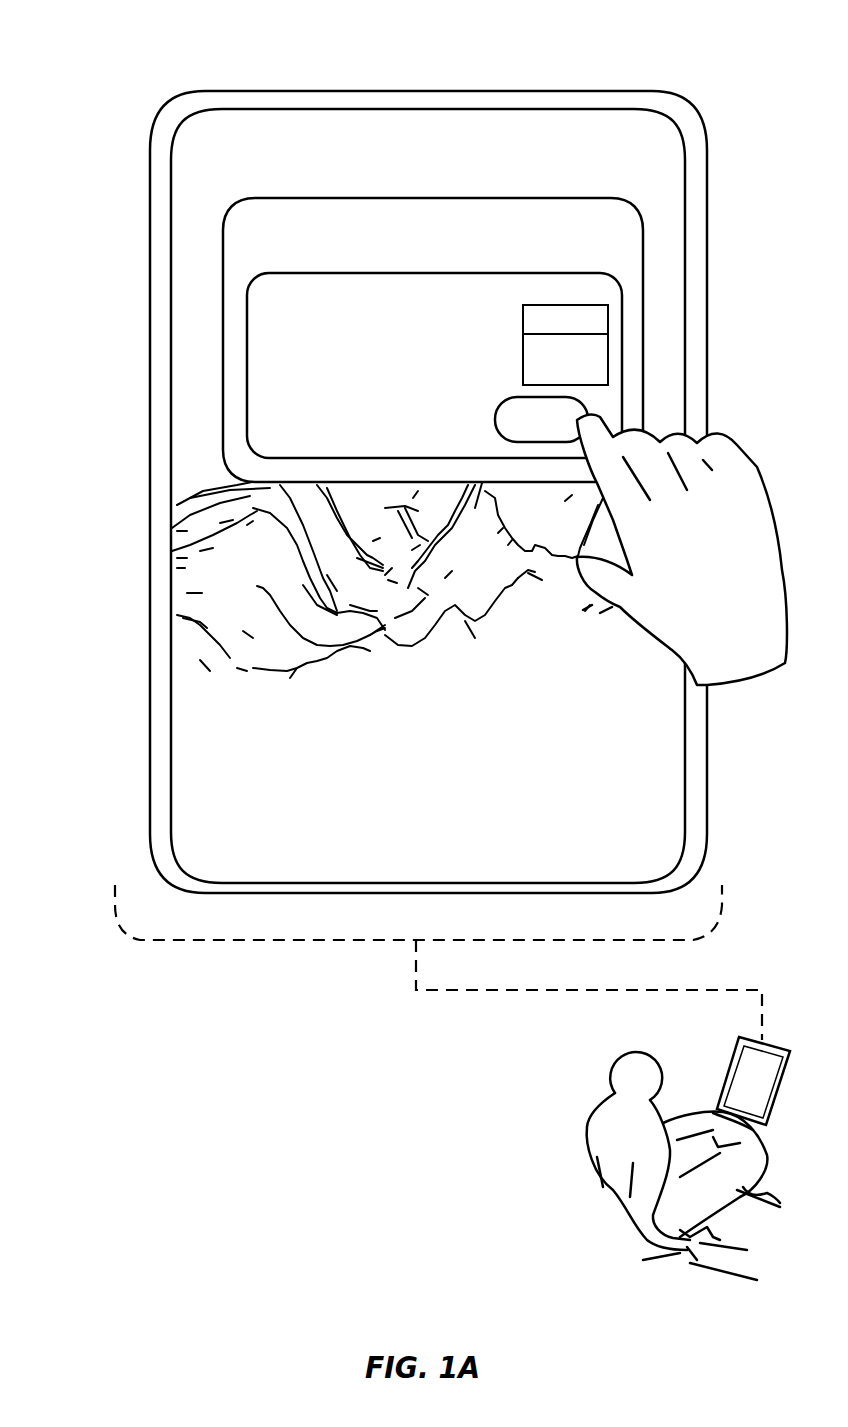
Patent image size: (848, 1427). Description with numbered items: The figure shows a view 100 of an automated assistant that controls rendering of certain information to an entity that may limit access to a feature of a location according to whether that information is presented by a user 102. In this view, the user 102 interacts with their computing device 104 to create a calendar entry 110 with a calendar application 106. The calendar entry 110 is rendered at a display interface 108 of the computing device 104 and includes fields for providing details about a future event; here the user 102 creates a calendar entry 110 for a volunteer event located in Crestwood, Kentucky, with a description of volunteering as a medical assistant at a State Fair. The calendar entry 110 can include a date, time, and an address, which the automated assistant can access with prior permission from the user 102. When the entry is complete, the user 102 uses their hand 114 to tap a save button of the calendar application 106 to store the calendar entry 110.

The view 100 is at (115, 75).
The user 102 is at (644, 1152).
The computing device 104 is at (150, 748).
The calendar application 106 is at (446, 257).
The display interface 108 is at (634, 146).
The calendar entry 110 is at (248, 444).
The hand 114 is at (736, 566).